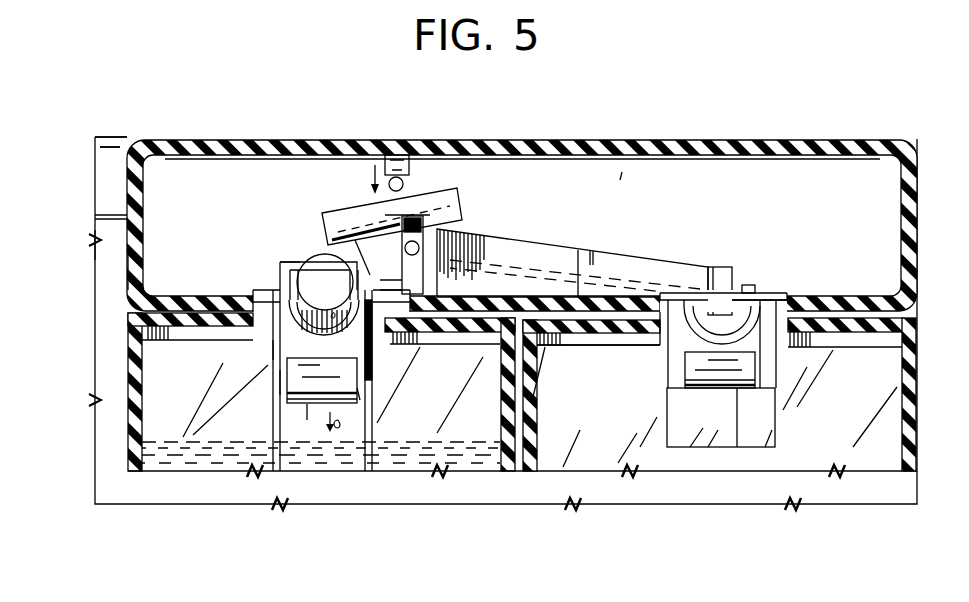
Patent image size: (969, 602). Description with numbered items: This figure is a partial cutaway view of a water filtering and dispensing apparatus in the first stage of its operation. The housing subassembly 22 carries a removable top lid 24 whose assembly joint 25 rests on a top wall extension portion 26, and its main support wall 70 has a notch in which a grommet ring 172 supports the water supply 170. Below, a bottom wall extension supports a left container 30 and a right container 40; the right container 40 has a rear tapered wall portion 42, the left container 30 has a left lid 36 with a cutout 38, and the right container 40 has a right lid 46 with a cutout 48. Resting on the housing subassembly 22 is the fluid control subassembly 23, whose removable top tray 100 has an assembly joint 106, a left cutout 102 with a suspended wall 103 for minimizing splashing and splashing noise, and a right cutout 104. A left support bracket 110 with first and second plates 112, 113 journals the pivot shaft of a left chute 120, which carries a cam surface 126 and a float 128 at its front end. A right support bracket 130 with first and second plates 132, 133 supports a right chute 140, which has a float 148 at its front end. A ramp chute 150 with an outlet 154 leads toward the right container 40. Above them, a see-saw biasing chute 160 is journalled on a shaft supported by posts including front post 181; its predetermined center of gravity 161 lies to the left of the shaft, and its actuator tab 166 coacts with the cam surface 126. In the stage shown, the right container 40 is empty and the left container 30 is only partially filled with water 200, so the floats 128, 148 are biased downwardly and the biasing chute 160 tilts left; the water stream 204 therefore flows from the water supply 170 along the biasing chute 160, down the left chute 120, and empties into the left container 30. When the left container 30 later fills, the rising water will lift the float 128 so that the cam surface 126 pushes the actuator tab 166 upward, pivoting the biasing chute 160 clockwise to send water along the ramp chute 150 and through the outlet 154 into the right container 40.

The housing subassembly 22 is at (708, 138).
The fluid control subassembly 23 is at (735, 186).
The removable top lid 24 is at (822, 140).
The assembly joint 25 is at (107, 215).
The top wall extension portion 26 is at (94, 254).
The left container 30 is at (124, 447).
The left lid 36 is at (483, 324).
The cutout 38 is at (381, 312).
The right container 40 is at (607, 473).
The rear tapered wall portion 42 is at (707, 447).
The right lid 46 is at (578, 323).
The cutout 48 is at (668, 322).
The main support wall 70 is at (619, 180).
The removable top tray 100 is at (190, 292).
The left cutout 102 is at (275, 294).
The suspended wall 103 is at (290, 362).
The right cutout 104 is at (772, 288).
The assembly joint 106 is at (130, 268).
The left support bracket 110 is at (280, 260).
The first plate 112 is at (282, 385).
The second plate 113 is at (358, 390).
The left chute 120 is at (272, 350).
The cam surface 126 is at (468, 258).
The float 128 is at (307, 404).
The right support bracket 130 is at (742, 288).
The first plate 132 is at (685, 363).
The second plate 133 is at (763, 366).
The right chute 140 is at (756, 285).
The float 148 is at (737, 447).
The ramp chute 150 is at (603, 252).
The outlet 154 is at (720, 268).
The biasing chute 160 is at (450, 188).
The center of gravity 161 is at (380, 214).
The actuator tab 166 is at (372, 283).
The water supply 170 is at (386, 156).
The grommet ring 172 is at (403, 180).
The front post 181 is at (422, 272).
The water 200 is at (358, 457).
The water stream 204 is at (311, 288).